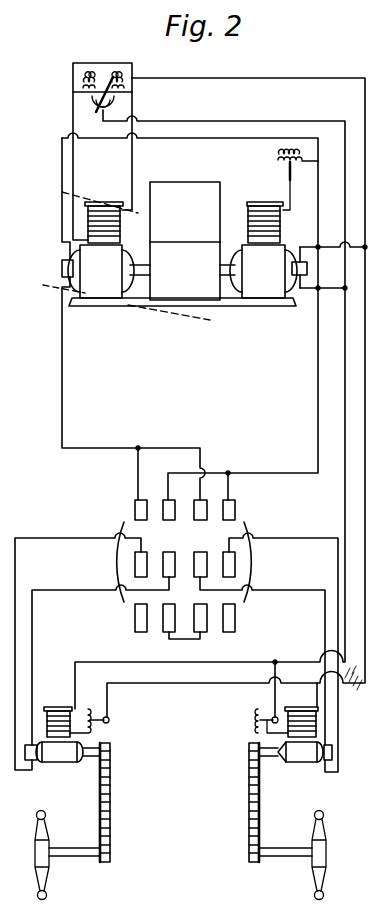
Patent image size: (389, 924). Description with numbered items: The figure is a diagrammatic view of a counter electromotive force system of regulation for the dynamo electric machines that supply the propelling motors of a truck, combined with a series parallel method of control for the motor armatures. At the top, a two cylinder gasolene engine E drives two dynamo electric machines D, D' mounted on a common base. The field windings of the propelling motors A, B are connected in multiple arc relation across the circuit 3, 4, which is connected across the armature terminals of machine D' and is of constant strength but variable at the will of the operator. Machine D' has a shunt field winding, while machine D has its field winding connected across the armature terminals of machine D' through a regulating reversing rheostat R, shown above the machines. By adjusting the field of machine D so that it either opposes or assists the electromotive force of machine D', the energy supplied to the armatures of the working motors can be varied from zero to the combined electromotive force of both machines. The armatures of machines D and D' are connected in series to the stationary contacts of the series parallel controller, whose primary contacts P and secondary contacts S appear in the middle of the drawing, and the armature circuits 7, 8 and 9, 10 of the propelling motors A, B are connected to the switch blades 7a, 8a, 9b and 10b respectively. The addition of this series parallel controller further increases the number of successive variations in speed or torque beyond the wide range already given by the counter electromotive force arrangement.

The regulating reversing rheostat R is at (102, 77).
The circuit 3 is at (211, 409).
The circuit 4 is at (240, 397).
The dynamo electric machine D is at (106, 269).
The two cylinder gasolene engine E is at (185, 259).
The dynamo electric machine D' is at (263, 242).
The series parallel controller contacts P is at (173, 501).
The series parallel controller contacts S is at (174, 621).
The armature circuit 7 is at (71, 651).
The armature circuit 8 is at (32, 643).
The armature circuit 9 is at (325, 628).
The armature circuit 10 is at (338, 573).
The switch blade 7a is at (142, 562).
The switch blade 8a is at (171, 561).
The switch blade 9b is at (202, 555).
The switch blade 10b is at (235, 563).
The propelling motor A is at (67, 803).
The propelling motor B is at (290, 782).